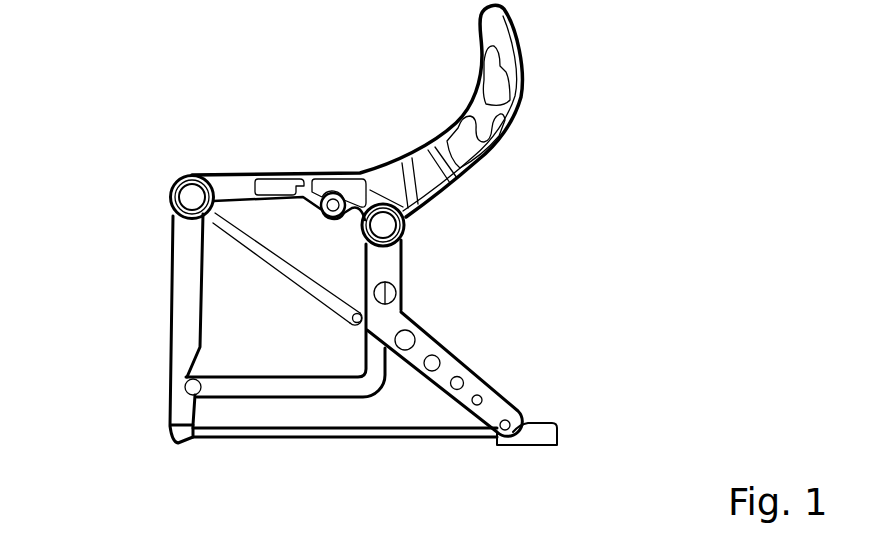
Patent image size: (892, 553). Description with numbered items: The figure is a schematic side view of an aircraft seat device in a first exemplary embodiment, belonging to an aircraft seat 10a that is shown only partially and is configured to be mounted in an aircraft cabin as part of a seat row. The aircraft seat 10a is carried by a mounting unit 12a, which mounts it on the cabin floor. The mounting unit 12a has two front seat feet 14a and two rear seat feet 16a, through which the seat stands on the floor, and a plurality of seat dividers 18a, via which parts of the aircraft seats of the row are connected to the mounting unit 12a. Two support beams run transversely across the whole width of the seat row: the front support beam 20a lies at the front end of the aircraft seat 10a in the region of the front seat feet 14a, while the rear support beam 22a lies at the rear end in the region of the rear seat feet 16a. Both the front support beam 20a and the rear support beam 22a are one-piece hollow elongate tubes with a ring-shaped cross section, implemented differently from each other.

The aircraft seat 10a is at (239, 122).
The mounting unit 12a is at (154, 227).
The front seat feet 14a is at (187, 323).
The rear seat feet 16a is at (405, 316).
The seat divider 18a is at (338, 192).
The front support beam 20a is at (170, 196).
The rear support beam 22a is at (405, 231).